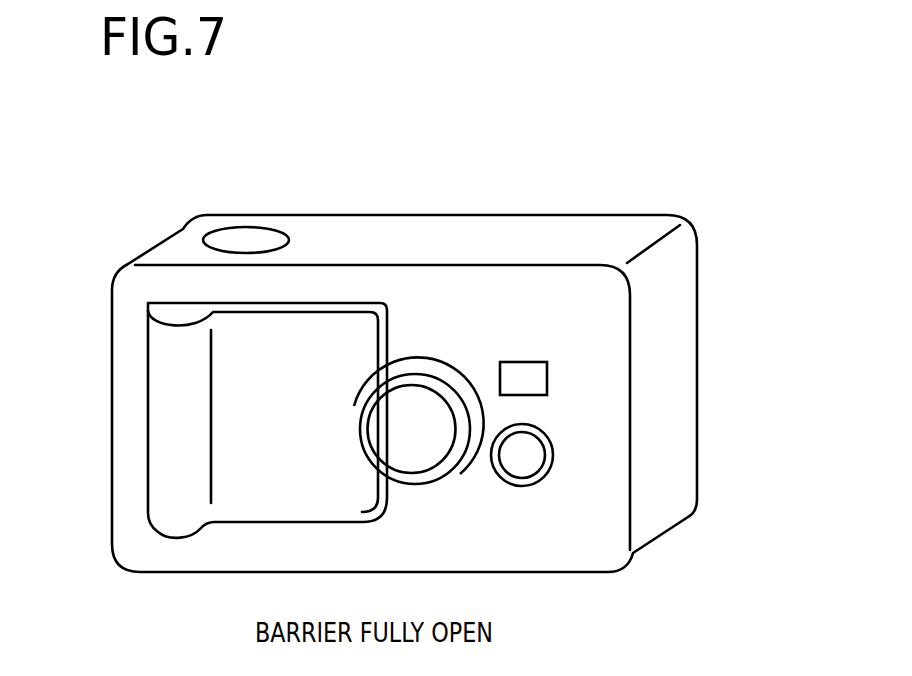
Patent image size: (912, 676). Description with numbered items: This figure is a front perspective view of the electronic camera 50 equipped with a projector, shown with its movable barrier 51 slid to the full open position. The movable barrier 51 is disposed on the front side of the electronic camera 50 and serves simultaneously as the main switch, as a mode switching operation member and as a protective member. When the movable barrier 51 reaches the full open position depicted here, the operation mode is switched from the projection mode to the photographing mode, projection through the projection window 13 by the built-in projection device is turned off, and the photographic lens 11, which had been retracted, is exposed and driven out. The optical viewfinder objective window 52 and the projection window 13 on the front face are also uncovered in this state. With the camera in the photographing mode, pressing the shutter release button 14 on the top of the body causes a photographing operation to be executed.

The electronic camera equipped with a projector 50 is at (757, 412).
The shutter release button 14 is at (232, 227).
The movable barrier 51 is at (287, 415).
The photographic lens 11 is at (432, 448).
The optical viewfinder objective window 52 is at (533, 378).
The projection window 13 is at (533, 457).